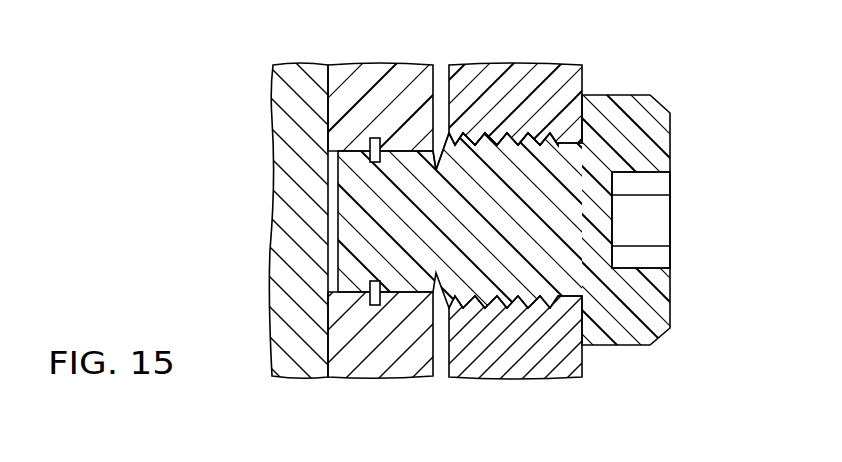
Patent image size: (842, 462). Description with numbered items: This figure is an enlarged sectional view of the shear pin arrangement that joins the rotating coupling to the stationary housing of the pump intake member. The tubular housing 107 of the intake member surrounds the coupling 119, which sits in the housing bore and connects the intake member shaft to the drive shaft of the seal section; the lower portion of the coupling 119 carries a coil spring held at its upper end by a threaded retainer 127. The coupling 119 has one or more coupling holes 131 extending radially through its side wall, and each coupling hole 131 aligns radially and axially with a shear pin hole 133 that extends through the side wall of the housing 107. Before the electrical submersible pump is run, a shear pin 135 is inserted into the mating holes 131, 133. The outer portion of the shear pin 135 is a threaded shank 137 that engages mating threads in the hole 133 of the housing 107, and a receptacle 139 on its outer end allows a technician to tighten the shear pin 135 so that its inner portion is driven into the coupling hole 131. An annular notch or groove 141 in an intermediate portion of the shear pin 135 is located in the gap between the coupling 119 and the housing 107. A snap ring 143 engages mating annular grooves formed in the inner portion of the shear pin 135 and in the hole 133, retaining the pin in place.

The tubular housing 107 is at (527, 362).
The coupling 119 is at (337, 113).
The threaded retainer 127 is at (287, 264).
The coupling hole 131 is at (338, 153).
The shear pin hole 133 is at (537, 137).
The shear pin 135 is at (622, 346).
The threaded shank 137 is at (465, 132).
The receptacle 139 is at (640, 172).
The annular notch or groove 141 is at (436, 170).
The snap ring 143 is at (372, 307).